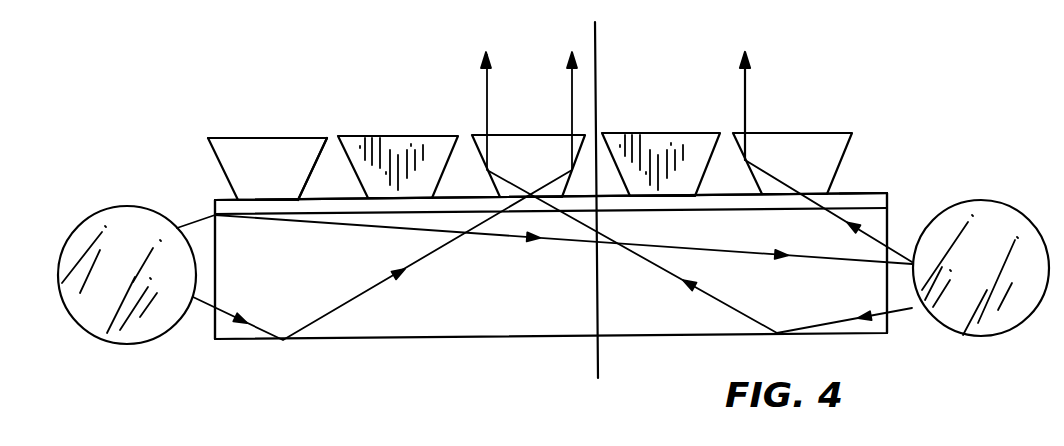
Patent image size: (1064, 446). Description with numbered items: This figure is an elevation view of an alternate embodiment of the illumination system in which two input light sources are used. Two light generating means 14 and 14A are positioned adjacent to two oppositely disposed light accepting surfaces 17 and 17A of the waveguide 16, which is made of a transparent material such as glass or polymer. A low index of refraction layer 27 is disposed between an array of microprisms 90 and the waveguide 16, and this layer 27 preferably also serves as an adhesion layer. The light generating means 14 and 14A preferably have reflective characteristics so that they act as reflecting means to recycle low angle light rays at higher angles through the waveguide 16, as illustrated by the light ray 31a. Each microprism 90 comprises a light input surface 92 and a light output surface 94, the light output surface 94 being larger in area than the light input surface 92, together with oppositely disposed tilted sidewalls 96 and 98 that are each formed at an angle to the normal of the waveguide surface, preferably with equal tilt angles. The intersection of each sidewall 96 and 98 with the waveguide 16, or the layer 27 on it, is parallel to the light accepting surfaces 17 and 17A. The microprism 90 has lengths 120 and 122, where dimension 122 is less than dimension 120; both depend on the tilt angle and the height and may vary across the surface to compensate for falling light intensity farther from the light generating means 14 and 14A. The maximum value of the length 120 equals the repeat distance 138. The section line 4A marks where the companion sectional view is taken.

The light generating means 14 is at (107, 207).
The light generating means 14A is at (990, 200).
The waveguide 16 is at (503, 338).
The light accepting surface 17 is at (213, 325).
The light accepting surface 17A is at (888, 325).
The low index of refraction layer 27 is at (870, 193).
The light ray 31a is at (745, 93).
The microprism 90 is at (843, 133).
The light input surface 92 is at (257, 198).
The light output surface 94 is at (300, 137).
The tilted sidewall 96 is at (215, 157).
The tilted sidewall 98 is at (308, 175).
The length dimension 120 is at (457, 110).
The length dimension 122 is at (433, 200).
The repeat distance 138 is at (457, 130).
The section line 4A- 4A is at (595, 32).